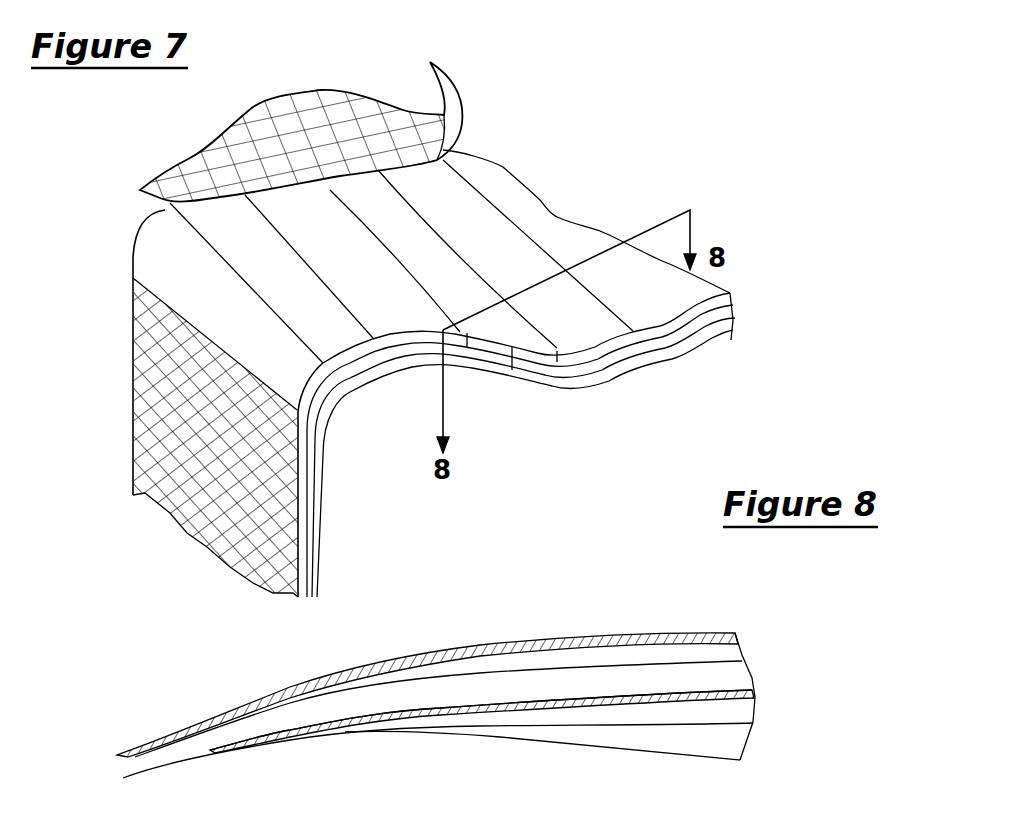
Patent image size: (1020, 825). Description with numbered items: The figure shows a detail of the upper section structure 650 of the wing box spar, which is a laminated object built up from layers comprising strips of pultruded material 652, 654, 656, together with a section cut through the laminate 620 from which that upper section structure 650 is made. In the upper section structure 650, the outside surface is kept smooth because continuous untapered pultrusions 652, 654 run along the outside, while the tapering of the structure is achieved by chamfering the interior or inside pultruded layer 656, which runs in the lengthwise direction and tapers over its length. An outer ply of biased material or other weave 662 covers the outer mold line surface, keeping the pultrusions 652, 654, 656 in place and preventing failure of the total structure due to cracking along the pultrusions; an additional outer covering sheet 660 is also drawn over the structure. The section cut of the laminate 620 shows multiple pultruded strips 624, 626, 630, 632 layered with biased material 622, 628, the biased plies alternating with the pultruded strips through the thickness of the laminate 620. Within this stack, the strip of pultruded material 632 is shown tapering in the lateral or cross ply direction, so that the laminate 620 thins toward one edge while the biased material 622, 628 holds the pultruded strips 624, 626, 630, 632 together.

In FIG. 7, the laminate 620 is at (592, 436).
In FIG. 8, the laminate 620 is at (504, 692).
In FIG. 8, the biased material 622 is at (736, 636).
In FIG. 8, the pultruded strip 624 is at (741, 653).
In FIG. 8, the pultruded strip 626 is at (754, 677).
In FIG. 8, the biased material 628 is at (756, 693).
In FIG. 8, the pultruded strip 630 is at (756, 711).
In FIG. 8, the pultruded strip 632 is at (597, 747).
In FIG. 7, the upper section structure 650 is at (573, 134).
In FIG. 7, the strip of pultruded material 652 is at (615, 332).
In FIG. 7, the strip of pultruded material 654 is at (513, 345).
In FIG. 7, the strip of pultruded material 656 is at (557, 392).
In FIG. 7, the outer fabric sheet 660 is at (467, 97).
In FIG. 7, the outer ply of biased material 662 is at (137, 400).